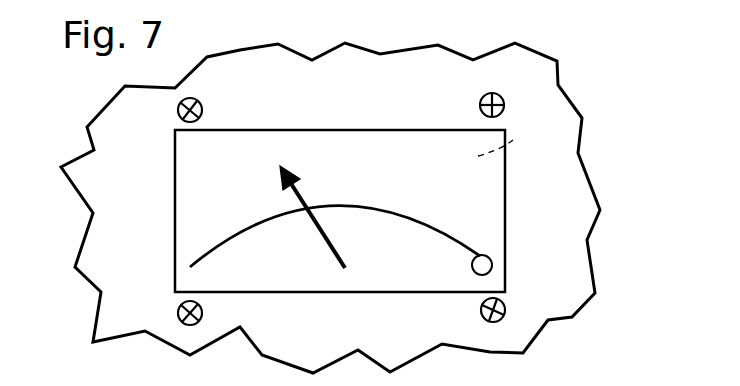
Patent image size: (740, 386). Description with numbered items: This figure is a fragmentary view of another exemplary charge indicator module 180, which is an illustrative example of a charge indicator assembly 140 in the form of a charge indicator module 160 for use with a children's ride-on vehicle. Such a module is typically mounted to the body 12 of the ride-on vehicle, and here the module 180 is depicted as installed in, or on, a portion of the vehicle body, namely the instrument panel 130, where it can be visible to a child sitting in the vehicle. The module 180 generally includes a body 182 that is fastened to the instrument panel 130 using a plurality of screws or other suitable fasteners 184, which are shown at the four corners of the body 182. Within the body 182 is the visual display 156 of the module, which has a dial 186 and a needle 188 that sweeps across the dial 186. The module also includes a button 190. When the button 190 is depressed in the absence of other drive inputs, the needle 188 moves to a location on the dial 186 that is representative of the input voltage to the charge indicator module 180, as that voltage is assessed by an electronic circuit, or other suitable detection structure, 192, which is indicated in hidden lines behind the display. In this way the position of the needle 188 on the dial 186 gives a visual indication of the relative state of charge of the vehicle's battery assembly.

The body 12 is at (410, 60).
The instrument panel 130 is at (567, 226).
The charge indicator assembly 140 is at (630, 44).
The visual display 156 is at (352, 298).
The charge indicator module 160 is at (620, 102).
The charge indicator module 180 is at (580, 176).
The body 182 is at (192, 160).
The fasteners 184 is at (178, 112).
The dial 186 is at (352, 214).
The needle 188 is at (296, 187).
The button 190 is at (472, 262).
The electronic circuit 192 is at (518, 142).